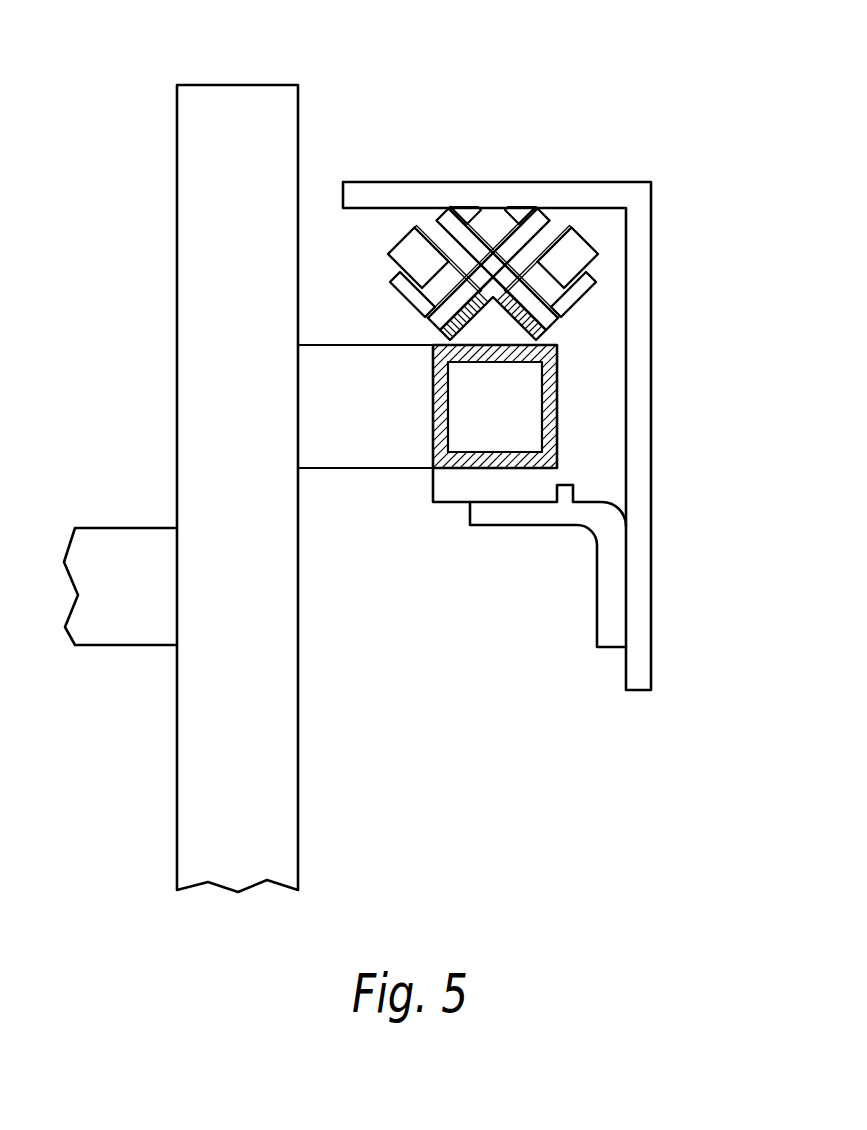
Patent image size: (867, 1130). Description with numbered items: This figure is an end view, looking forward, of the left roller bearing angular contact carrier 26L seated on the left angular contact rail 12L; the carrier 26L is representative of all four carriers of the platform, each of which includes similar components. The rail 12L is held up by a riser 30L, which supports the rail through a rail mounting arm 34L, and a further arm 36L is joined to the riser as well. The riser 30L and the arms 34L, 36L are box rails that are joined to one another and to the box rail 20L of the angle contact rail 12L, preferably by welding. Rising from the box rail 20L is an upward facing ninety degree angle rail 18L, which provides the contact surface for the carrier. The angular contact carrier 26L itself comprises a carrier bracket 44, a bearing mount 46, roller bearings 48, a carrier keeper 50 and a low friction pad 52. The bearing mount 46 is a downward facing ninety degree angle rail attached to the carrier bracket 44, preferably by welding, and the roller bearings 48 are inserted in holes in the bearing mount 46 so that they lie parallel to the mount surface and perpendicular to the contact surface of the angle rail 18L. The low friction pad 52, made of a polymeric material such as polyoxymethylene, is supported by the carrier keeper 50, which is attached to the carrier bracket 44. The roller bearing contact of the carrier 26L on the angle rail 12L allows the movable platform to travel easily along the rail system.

The angular contact carrier 26L is at (694, 78).
The riser 30L is at (205, 325).
The rail mounting arm 34L is at (378, 440).
The arm 36L is at (135, 610).
The left rail 12L is at (592, 376).
The upward facing 90° angle rail 18L is at (540, 325).
The box rail 20L is at (548, 410).
The carrier bracket 44 is at (637, 603).
The bearing mount 46 is at (537, 216).
The roller bearings 48 is at (370, 268).
The carrier keeper 50 is at (598, 518).
The low friction pad 52 is at (528, 485).